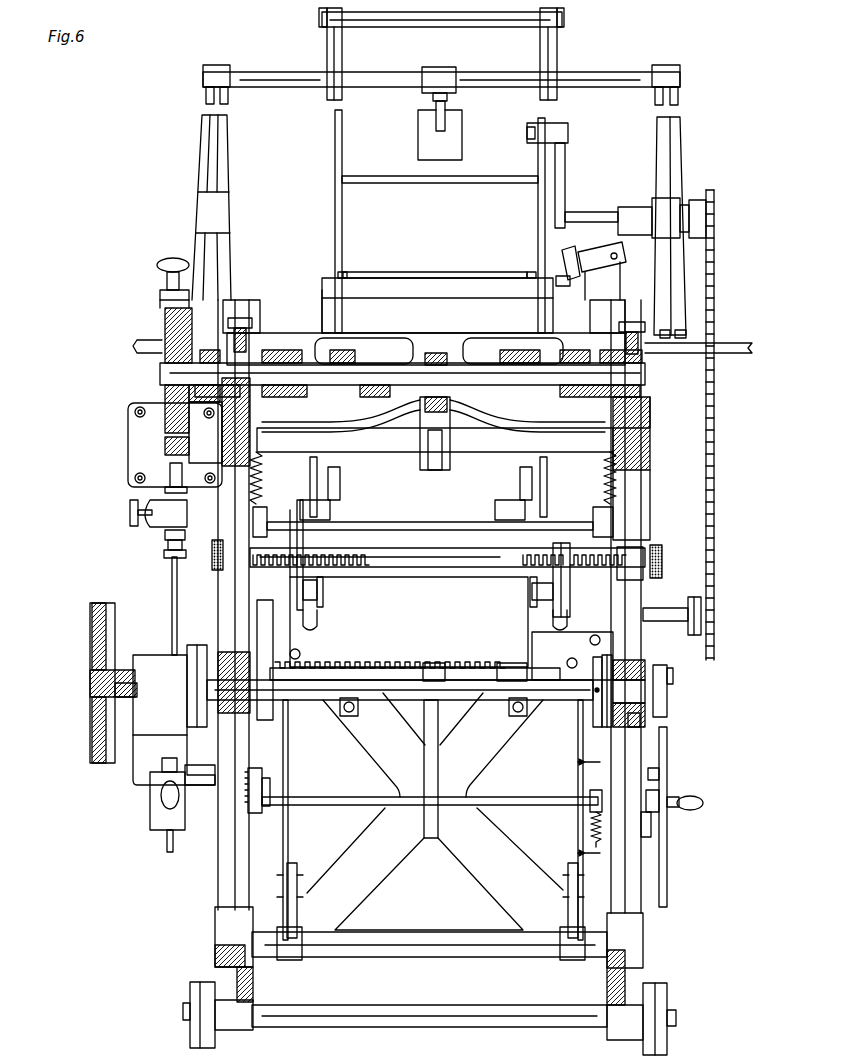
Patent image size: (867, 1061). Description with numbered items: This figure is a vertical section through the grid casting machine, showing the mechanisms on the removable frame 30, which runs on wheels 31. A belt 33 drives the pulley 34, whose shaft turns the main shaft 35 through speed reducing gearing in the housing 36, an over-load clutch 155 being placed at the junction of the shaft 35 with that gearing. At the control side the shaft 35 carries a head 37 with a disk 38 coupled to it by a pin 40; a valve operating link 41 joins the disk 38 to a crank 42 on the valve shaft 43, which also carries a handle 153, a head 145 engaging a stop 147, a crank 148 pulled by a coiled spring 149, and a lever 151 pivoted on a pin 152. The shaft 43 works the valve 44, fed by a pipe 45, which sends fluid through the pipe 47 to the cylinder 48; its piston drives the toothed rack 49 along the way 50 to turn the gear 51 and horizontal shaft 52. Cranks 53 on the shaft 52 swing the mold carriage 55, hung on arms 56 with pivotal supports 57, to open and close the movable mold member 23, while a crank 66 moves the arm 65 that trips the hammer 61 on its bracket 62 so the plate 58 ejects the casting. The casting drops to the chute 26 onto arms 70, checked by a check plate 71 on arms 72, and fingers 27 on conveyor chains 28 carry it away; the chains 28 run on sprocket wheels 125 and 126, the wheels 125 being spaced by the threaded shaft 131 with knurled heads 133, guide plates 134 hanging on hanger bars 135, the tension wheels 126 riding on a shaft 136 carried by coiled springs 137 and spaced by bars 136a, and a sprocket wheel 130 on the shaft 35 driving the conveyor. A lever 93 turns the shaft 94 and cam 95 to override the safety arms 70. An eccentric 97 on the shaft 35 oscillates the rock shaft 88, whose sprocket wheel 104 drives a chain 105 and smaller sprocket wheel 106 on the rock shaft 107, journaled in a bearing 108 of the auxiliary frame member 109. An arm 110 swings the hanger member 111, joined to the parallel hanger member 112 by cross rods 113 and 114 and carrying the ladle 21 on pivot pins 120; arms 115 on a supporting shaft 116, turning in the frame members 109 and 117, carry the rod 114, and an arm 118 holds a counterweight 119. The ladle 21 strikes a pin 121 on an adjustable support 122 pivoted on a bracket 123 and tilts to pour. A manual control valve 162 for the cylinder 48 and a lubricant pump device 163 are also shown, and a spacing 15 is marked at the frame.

The gap dimension 15 is at (578, 762).
The ladle 21 is at (397, 276).
The movable mold member 23 is at (440, 286).
The chute 26 is at (409, 588).
The fingers 27 is at (317, 462).
The conveyor chains 28 is at (317, 588).
The frame 30 is at (641, 425).
The wheels 31 is at (190, 1030).
The belt 33 is at (100, 603).
The pulley 34 is at (95, 645).
The shaft 35 is at (297, 692).
The housing 36 is at (160, 665).
The head 37 is at (647, 673).
The disk 38 is at (660, 690).
The pin 40 is at (673, 674).
The valve operating link 41 is at (667, 752).
The crank 42 is at (659, 800).
The valve shaft 43 is at (365, 803).
The valve 44 is at (162, 795).
The pipe 45 is at (170, 840).
The pipe 47 is at (172, 590).
The cylinder 48 is at (137, 433).
The toothed rack 49 is at (165, 450).
The guide or way 50 is at (210, 455).
The gear 51 is at (170, 392).
The horizontal shaft 52 is at (482, 378).
The cranks 53 is at (266, 350).
The mold carriage 55 is at (372, 348).
The arms 56 is at (578, 745).
The pivotal supports 57 is at (472, 948).
The plate 58 is at (336, 308).
The hammer 61 is at (420, 415).
The bracket 62 is at (420, 462).
The arm 65 is at (445, 453).
The crank 66 is at (436, 353).
The arms 70 is at (323, 598).
The check plate 71 is at (504, 460).
The arms 72 is at (265, 455).
The rock shaft 88 is at (678, 612).
The lever 93 is at (640, 722).
The shaft 94 is at (485, 672).
The cam 95 is at (433, 663).
The eccentric 97 is at (265, 720).
The sprocket wheel 104 is at (700, 583).
The chain 105 is at (716, 282).
The smaller sprocket wheel 106 is at (696, 200).
The rock shaft 107 is at (605, 212).
The bearing 108 is at (655, 205).
The auxiliary frame member 109 is at (680, 133).
The arm 110 is at (565, 162).
The hanger member 111 is at (538, 210).
The hanger member 112 is at (335, 152).
The cross rod 113 is at (390, 178).
The cross rod 114 is at (428, 18).
The arms 115 is at (327, 49).
The supporting shaft 116 is at (515, 78).
The frame member 117 is at (205, 150).
The arm 118 is at (430, 118).
The counterweight 119 is at (420, 145).
The pivot pins 120 is at (342, 272).
The pin 121 is at (556, 280).
The adjustable support 122 is at (562, 262).
The bracket 123 is at (612, 252).
The sprocket wheels 125 is at (340, 556).
The sprocket wheels 126 is at (335, 520).
The sprocket wheel 130 is at (602, 718).
The shaft 131 is at (451, 555).
The knurled heads 133 is at (218, 570).
The guide plates 134 is at (305, 650).
The hanger bars 135 is at (297, 587).
The shaft 136 is at (416, 522).
The bars 136a is at (253, 517).
The coiled springs 137 is at (252, 494).
The head 145 is at (264, 790).
The stop 147 is at (255, 778).
The crank 148 is at (590, 795).
The coiled spring 149 is at (594, 830).
The lever 151 is at (651, 835).
The pin 152 is at (659, 773).
The handle 153 is at (703, 803).
The over-load clutch 155 is at (197, 684).
The manual control valve 162 is at (165, 530).
The pump device 163 is at (160, 296).